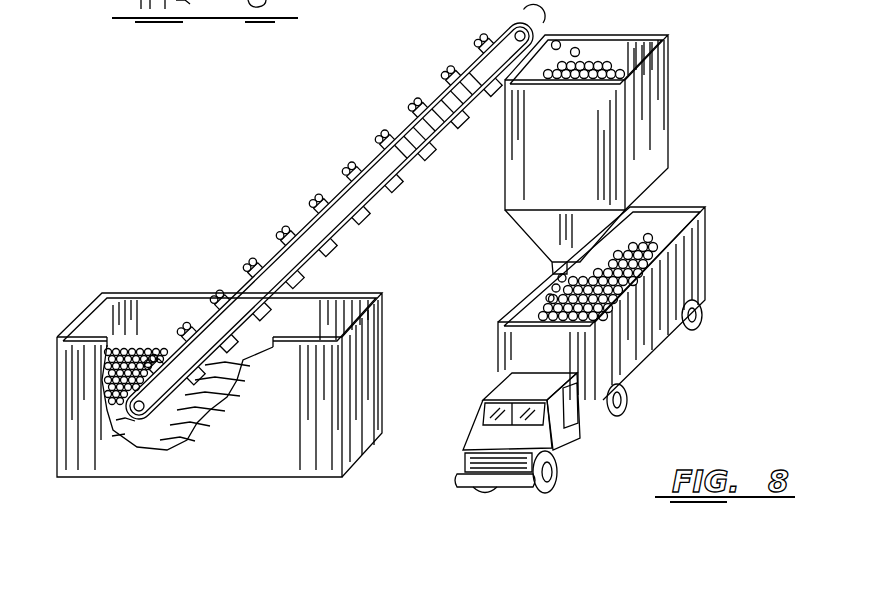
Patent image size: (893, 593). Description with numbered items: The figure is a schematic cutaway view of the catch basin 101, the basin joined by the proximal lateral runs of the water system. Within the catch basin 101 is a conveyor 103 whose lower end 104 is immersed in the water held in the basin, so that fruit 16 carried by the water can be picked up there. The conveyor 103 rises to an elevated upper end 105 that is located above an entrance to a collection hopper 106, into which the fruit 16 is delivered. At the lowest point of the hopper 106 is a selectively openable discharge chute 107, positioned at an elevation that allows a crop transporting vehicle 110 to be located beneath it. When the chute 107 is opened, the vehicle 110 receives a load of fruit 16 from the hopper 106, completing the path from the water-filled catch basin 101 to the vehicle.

The fruit 16 is at (417, 103).
The catch basin 101 is at (175, 320).
The conveyor 103 is at (327, 197).
The lower end 104 is at (139, 411).
The elevated upper end 105 is at (508, 18).
The collection hopper 106 is at (653, 77).
The selectively openable discharge chute 107 is at (553, 268).
The crop transporting vehicle 110 is at (640, 342).